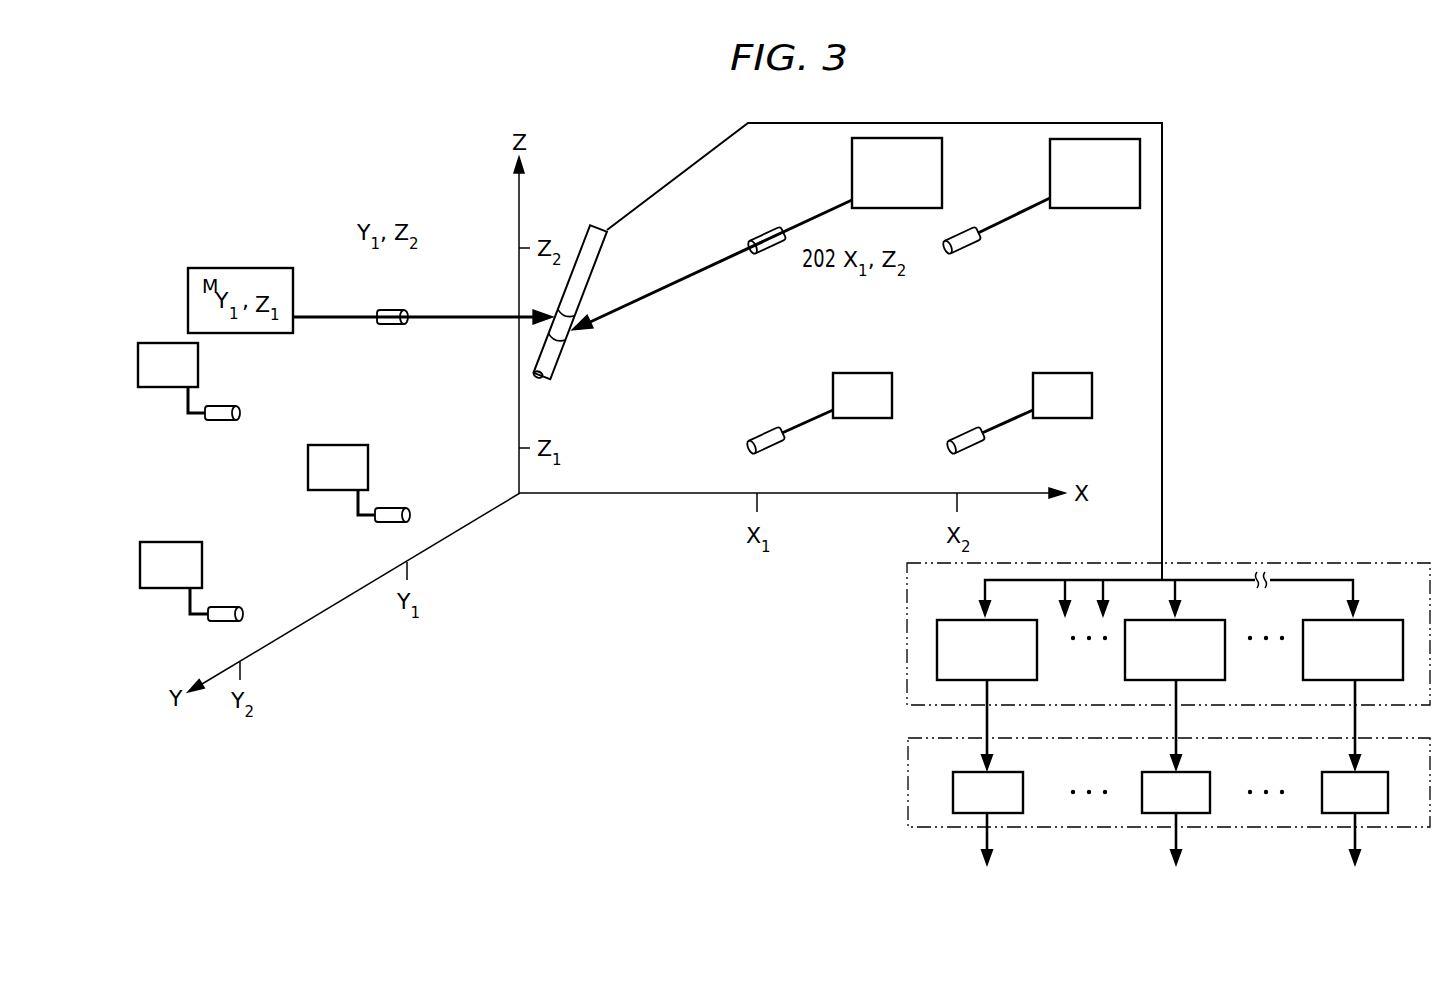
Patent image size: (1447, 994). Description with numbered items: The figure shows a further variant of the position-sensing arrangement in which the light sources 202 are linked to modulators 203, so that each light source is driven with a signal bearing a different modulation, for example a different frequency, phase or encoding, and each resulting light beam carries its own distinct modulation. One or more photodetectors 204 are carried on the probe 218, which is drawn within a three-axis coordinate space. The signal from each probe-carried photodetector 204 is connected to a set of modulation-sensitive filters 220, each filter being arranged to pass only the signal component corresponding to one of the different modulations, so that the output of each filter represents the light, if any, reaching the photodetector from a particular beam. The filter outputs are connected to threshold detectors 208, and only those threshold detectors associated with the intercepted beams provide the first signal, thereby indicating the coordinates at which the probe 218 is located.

The light source 202 is at (800, 265).
The modulator 203 is at (942, 200).
The photodetector 204 is at (573, 339).
The probe 218 is at (591, 226).
The modulation-sensitive filter 220 is at (907, 645).
The threshold detector 208 is at (908, 785).